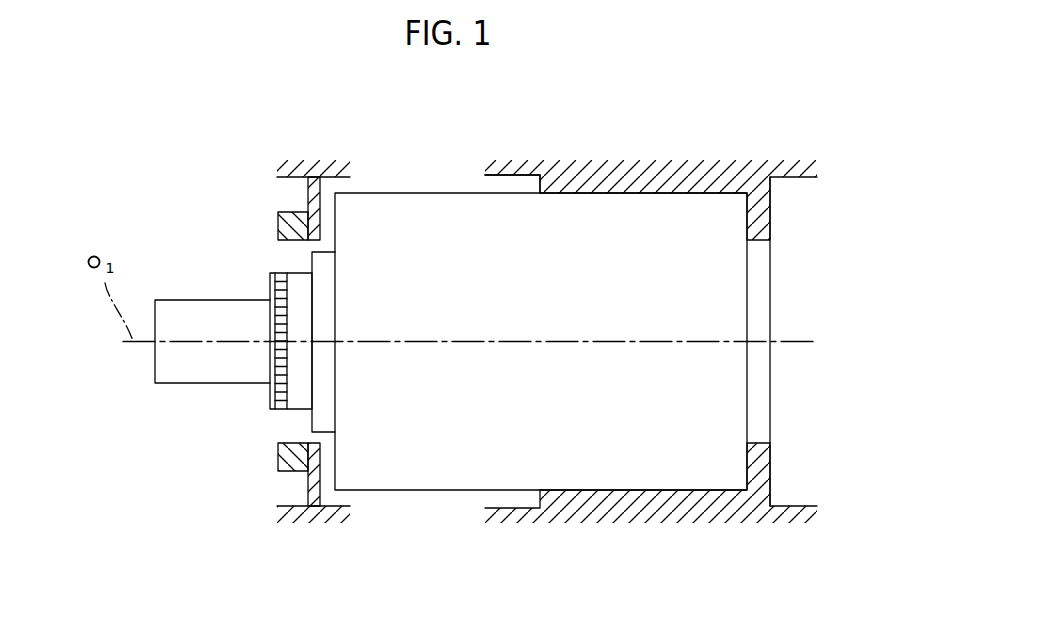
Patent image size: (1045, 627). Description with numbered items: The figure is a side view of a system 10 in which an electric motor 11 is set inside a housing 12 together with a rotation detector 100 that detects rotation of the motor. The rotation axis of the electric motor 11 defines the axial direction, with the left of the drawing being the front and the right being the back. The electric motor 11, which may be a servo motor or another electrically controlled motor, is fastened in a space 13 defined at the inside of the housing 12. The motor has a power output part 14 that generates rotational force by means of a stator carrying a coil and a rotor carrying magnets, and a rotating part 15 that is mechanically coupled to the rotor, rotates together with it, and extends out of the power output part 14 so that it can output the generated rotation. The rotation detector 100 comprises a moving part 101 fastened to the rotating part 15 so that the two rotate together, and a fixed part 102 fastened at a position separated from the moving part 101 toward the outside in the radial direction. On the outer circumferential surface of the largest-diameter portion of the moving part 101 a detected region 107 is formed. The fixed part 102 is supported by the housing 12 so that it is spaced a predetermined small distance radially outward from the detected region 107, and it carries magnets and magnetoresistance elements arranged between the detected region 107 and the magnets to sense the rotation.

The system 10 is at (738, 135).
The electric motor 11 is at (362, 135).
The housing 12 is at (314, 175).
The space 13 is at (513, 188).
The power output part 14 is at (418, 212).
The rotating part 15 is at (327, 257).
The rotation detector 100 is at (123, 193).
The moving part 101 is at (182, 299).
The fixed part 102 is at (278, 223).
The detected region 107 is at (275, 409).